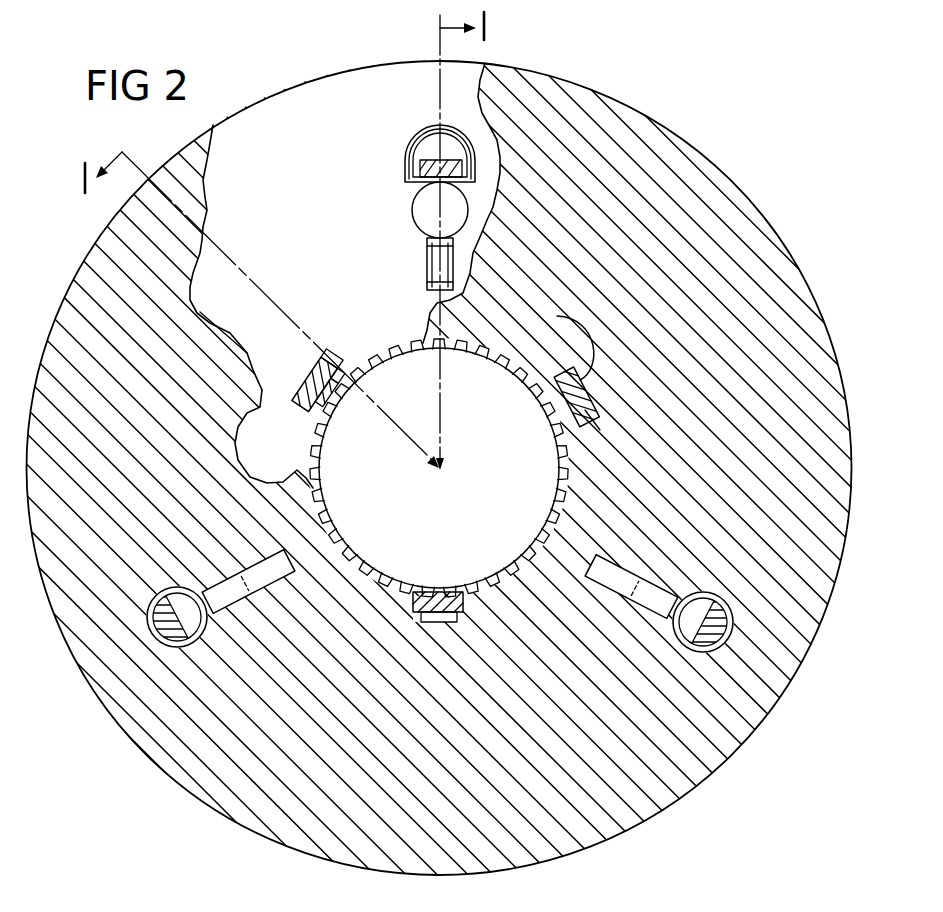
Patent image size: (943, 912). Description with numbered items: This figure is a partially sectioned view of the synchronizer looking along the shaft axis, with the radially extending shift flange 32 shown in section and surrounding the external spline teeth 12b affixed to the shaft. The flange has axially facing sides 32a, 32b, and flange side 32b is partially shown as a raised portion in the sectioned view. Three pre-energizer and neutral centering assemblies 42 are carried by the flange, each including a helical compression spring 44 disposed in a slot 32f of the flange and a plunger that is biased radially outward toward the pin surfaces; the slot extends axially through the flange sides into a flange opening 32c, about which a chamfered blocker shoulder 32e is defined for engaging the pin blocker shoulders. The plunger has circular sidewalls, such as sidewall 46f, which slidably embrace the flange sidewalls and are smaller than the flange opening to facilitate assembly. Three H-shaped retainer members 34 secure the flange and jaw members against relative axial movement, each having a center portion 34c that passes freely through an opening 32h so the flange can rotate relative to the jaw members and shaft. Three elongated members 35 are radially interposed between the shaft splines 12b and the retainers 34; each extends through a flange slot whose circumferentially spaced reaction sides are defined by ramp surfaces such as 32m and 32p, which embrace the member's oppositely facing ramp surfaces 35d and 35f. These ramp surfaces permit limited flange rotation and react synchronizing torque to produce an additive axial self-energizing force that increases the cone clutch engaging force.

The shift flange 32 is at (690, 128).
The flange side 32b is at (327, 88).
The blocker shoulder 32e is at (433, 134).
The flange opening 32c is at (410, 157).
The plunger sidewall 46f is at (412, 205).
The pre-energizer and neutral centering assembly 42 is at (340, 215).
The spring 44 is at (427, 252).
The slot 32f is at (440, 263).
The flange side 32a is at (427, 287).
The ramp surface 32m is at (352, 366).
The H-shaped retainer member 34 is at (300, 376).
The center portion 34c is at (557, 316).
The flange opening 32h is at (570, 433).
The ramp surface 35f is at (305, 418).
The ramp surface 32p is at (303, 446).
The ramp surface 35d is at (352, 386).
The elongated member 35 is at (538, 413).
The external spline teeth 12b is at (523, 550).